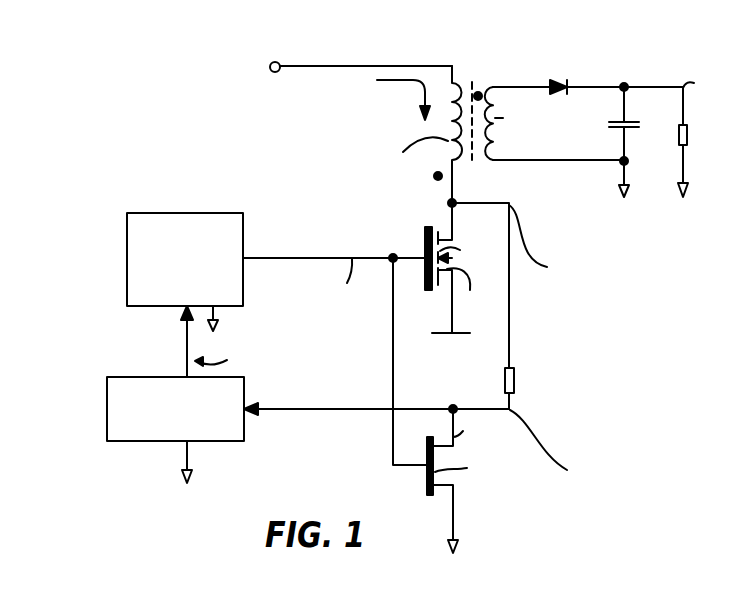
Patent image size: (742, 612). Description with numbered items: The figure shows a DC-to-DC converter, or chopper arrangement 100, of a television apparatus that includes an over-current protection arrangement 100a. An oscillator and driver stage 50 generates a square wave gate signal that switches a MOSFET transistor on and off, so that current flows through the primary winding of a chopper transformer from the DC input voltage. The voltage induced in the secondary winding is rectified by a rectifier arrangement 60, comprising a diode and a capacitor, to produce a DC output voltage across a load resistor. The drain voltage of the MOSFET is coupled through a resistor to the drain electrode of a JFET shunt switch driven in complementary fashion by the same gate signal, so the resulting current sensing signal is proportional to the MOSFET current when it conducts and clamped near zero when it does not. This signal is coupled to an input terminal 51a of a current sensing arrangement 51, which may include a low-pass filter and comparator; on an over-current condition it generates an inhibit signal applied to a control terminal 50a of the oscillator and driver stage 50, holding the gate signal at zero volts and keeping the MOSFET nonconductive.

The chopper arrangement 100 is at (548, 553).
The over-current protection arrangement 100a is at (460, 397).
The rectifier arrangement 60 is at (595, 148).
The oscillator and driver stage 50 is at (243, 238).
The control terminal 50a is at (183, 308).
The current sensing arrangement 51 is at (232, 378).
The input terminal 51a is at (244, 419).